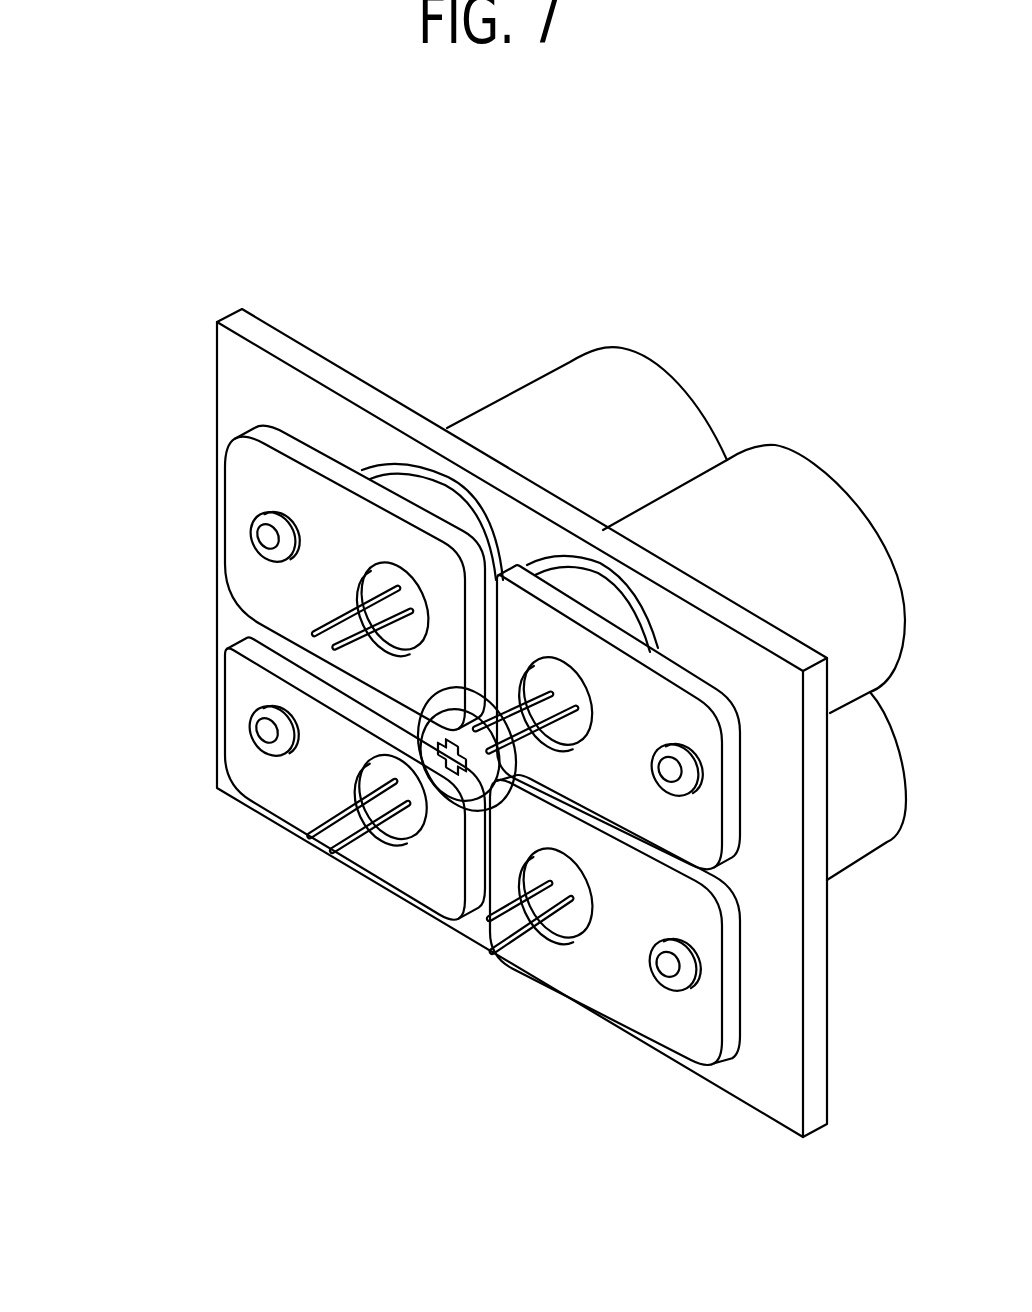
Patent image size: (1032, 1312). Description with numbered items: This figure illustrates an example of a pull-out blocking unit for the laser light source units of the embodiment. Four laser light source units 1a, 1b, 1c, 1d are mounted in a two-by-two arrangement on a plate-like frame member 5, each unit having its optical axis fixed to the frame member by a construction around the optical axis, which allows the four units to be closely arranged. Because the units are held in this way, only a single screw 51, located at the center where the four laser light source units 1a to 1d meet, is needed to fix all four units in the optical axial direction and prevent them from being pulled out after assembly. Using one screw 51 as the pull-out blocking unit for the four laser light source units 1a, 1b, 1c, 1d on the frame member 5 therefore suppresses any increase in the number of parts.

The mounting plate 5 is at (522, 655).
The screw 51 is at (299, 761).
The laser light source unit 1a is at (656, 575).
The laser light source unit 1b is at (618, 1022).
The laser light source unit 1c is at (299, 823).
The laser light source unit 1d is at (278, 522).